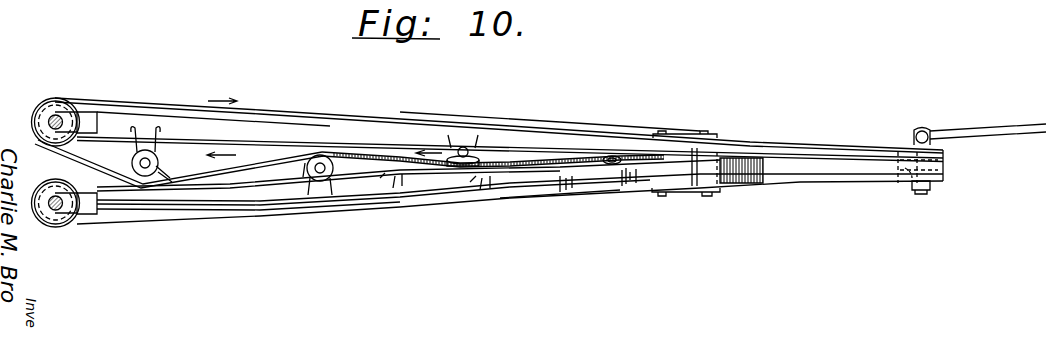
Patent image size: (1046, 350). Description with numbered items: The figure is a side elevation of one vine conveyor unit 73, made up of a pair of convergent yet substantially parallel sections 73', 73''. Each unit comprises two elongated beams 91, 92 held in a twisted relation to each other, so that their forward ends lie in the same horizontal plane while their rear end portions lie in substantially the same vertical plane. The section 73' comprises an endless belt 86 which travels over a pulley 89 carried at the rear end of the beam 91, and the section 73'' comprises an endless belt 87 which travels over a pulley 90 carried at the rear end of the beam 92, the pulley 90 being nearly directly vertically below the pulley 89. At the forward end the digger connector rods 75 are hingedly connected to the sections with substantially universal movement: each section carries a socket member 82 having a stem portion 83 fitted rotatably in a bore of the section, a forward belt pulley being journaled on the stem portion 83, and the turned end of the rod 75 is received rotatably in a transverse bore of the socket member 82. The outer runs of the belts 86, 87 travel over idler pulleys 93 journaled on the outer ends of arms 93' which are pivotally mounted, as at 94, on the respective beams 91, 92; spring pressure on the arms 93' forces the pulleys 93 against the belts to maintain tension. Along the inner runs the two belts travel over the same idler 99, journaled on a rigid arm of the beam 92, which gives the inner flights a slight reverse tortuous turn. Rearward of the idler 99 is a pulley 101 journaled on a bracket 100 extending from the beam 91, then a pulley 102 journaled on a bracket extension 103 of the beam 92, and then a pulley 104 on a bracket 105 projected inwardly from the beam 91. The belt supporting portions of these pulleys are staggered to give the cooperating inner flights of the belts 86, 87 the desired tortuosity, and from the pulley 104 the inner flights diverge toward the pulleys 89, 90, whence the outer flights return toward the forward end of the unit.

The vine conveyor unit 73 is at (480, 103).
The conveyor section 73' is at (630, 111).
The conveyor section 73'' is at (560, 214).
The digger connector rod 75 is at (1000, 129).
The socket member 82 is at (920, 131).
The stem portion 83 is at (904, 170).
The endless belt 86 is at (372, 152).
The endless belt 87 is at (388, 172).
The pulley 89 is at (57, 101).
The pulley 90 is at (57, 222).
The beam 91 is at (292, 133).
The beam 92 is at (285, 196).
The idler pulley 93 is at (731, 162).
The arm 93' is at (692, 161).
The pivot 94 is at (660, 133).
The idler 99 is at (590, 165).
The bracket 100 is at (478, 172).
The pulley 101 is at (470, 149).
The pulley 102 is at (336, 172).
The bracket extension 103 is at (318, 182).
The pulley 104 is at (190, 188).
The bracket 105 is at (158, 142).